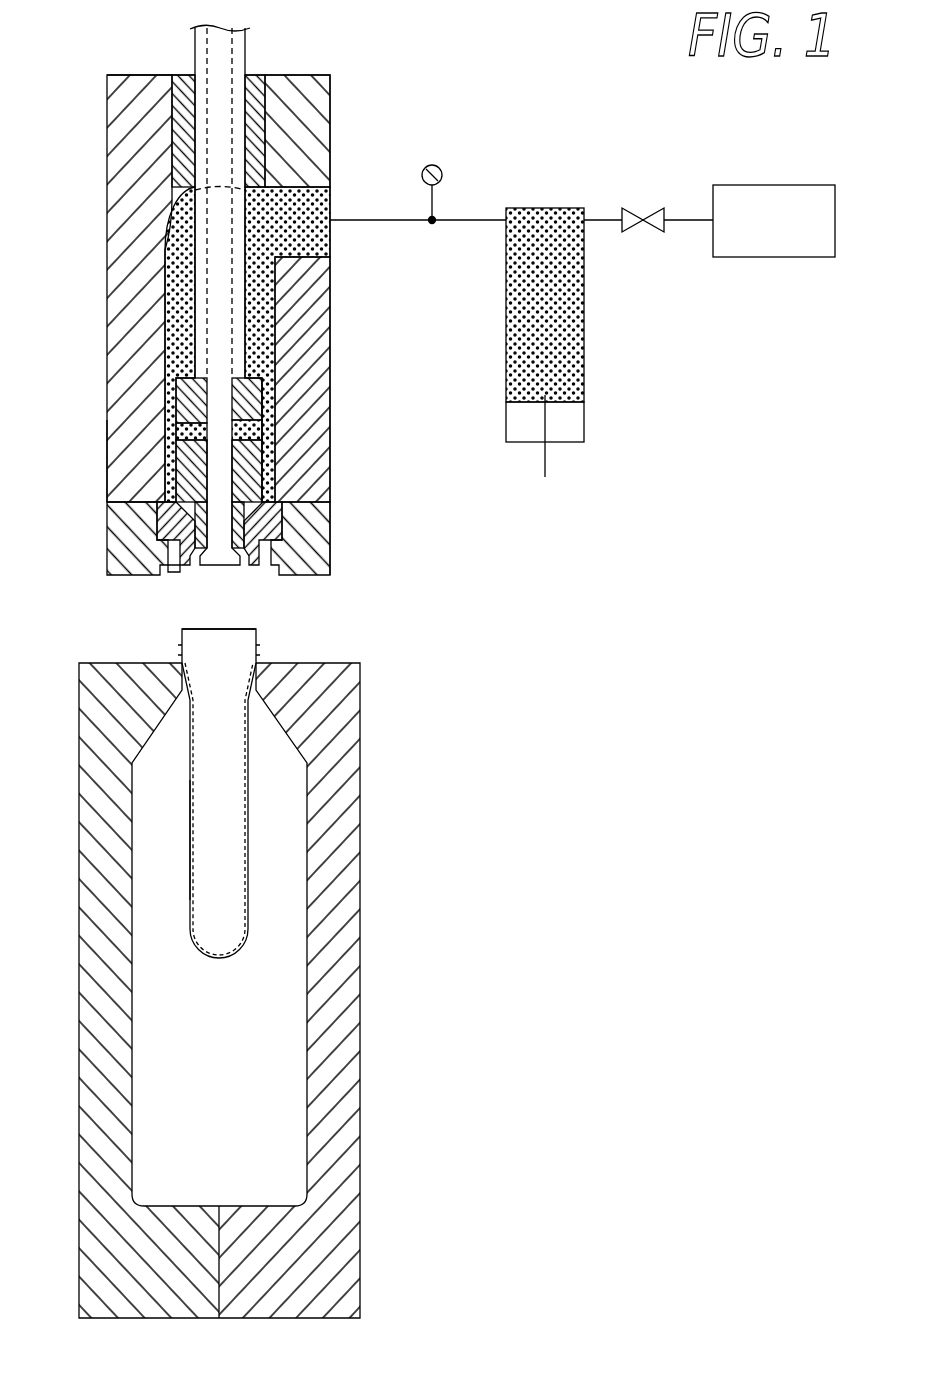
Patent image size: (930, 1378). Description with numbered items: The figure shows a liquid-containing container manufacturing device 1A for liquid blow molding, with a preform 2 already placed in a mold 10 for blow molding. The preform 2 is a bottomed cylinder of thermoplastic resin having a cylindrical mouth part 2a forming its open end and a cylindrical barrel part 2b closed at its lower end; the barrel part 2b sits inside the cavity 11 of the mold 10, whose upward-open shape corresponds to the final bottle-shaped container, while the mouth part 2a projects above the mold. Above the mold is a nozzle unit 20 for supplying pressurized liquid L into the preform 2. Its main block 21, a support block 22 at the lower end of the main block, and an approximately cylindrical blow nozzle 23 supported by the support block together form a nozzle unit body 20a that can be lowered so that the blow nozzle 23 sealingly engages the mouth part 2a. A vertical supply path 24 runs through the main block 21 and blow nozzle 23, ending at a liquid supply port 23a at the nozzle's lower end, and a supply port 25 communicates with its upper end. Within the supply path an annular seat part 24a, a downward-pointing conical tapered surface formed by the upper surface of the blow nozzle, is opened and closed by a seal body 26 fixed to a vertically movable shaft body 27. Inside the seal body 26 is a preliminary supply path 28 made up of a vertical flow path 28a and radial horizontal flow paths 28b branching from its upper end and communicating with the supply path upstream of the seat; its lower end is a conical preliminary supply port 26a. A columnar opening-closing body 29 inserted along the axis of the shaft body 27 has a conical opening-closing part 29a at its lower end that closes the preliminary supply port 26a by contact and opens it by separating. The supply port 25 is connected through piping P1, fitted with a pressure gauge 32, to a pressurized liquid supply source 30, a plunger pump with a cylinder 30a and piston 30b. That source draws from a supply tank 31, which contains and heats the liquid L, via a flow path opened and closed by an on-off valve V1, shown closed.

The liquid-containing container manufacturing device 1A is at (605, 640).
The preform 2 is at (256, 848).
The mouth part 2a is at (258, 635).
The barrel part 2b is at (250, 800).
The mold for blow molding 10 is at (366, 990).
The cavity 11 is at (307, 1043).
The nozzle unit 20 is at (342, 119).
The nozzle unit body 20a is at (102, 417).
The main block 21 is at (140, 251).
The support block 22 is at (125, 538).
The blow nozzle 23 is at (172, 503).
The liquid supply port 23a is at (251, 538).
The supply path 24 is at (275, 300).
The annular seat part 24a is at (243, 527).
The supply port 25 is at (305, 240).
The seal body 26 is at (172, 453).
The preliminary supply port 26a is at (233, 556).
The shaft body 27 is at (195, 290).
The preliminary supply path 28 is at (248, 414).
The vertical flow path 28a is at (232, 480).
The horizontal flow path 28b is at (262, 432).
The opening-closing body 29 is at (203, 398).
The opening-closing part 29a is at (200, 552).
The pressurized liquid supply source 30 is at (590, 288).
The cylinder 30a is at (585, 422).
The piston 30b is at (560, 400).
The supply tank 31 is at (762, 229).
The pressure gauge 32 is at (432, 165).
The piping P1 is at (380, 216).
The on-off valve V1 is at (645, 212).
The liquid L is at (540, 230).